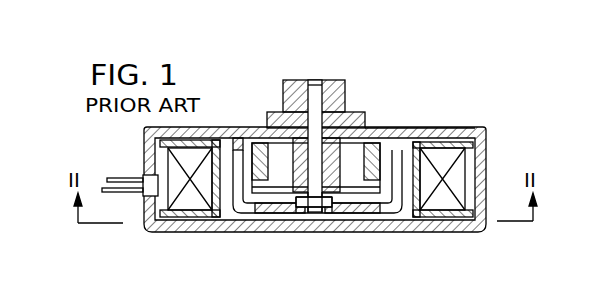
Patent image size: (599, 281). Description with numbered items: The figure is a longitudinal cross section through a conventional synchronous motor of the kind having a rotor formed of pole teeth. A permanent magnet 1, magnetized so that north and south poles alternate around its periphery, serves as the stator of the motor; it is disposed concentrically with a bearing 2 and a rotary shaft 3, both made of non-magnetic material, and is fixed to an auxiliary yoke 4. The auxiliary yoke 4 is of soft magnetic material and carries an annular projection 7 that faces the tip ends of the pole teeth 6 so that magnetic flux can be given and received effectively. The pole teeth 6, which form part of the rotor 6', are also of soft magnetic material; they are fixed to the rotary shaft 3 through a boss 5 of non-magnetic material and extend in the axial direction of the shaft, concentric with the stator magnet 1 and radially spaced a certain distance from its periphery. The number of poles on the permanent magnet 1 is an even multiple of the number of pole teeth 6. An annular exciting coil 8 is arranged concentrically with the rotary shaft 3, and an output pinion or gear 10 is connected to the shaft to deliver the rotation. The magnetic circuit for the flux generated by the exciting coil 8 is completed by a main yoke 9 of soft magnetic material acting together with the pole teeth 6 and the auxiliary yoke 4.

The permanent magnet 1 is at (382, 139).
The bearing 2 is at (355, 120).
The rotary shaft 3 is at (312, 93).
The auxiliary yoke 4 is at (457, 128).
The boss 5 is at (308, 203).
The pole teeth 6 is at (318, 212).
The rotor 6' is at (311, 239).
The annular projection 7 is at (242, 137).
The annular exciting coil 8 is at (458, 168).
The main yoke 9 is at (202, 220).
The output pinion or gear 10 is at (292, 92).